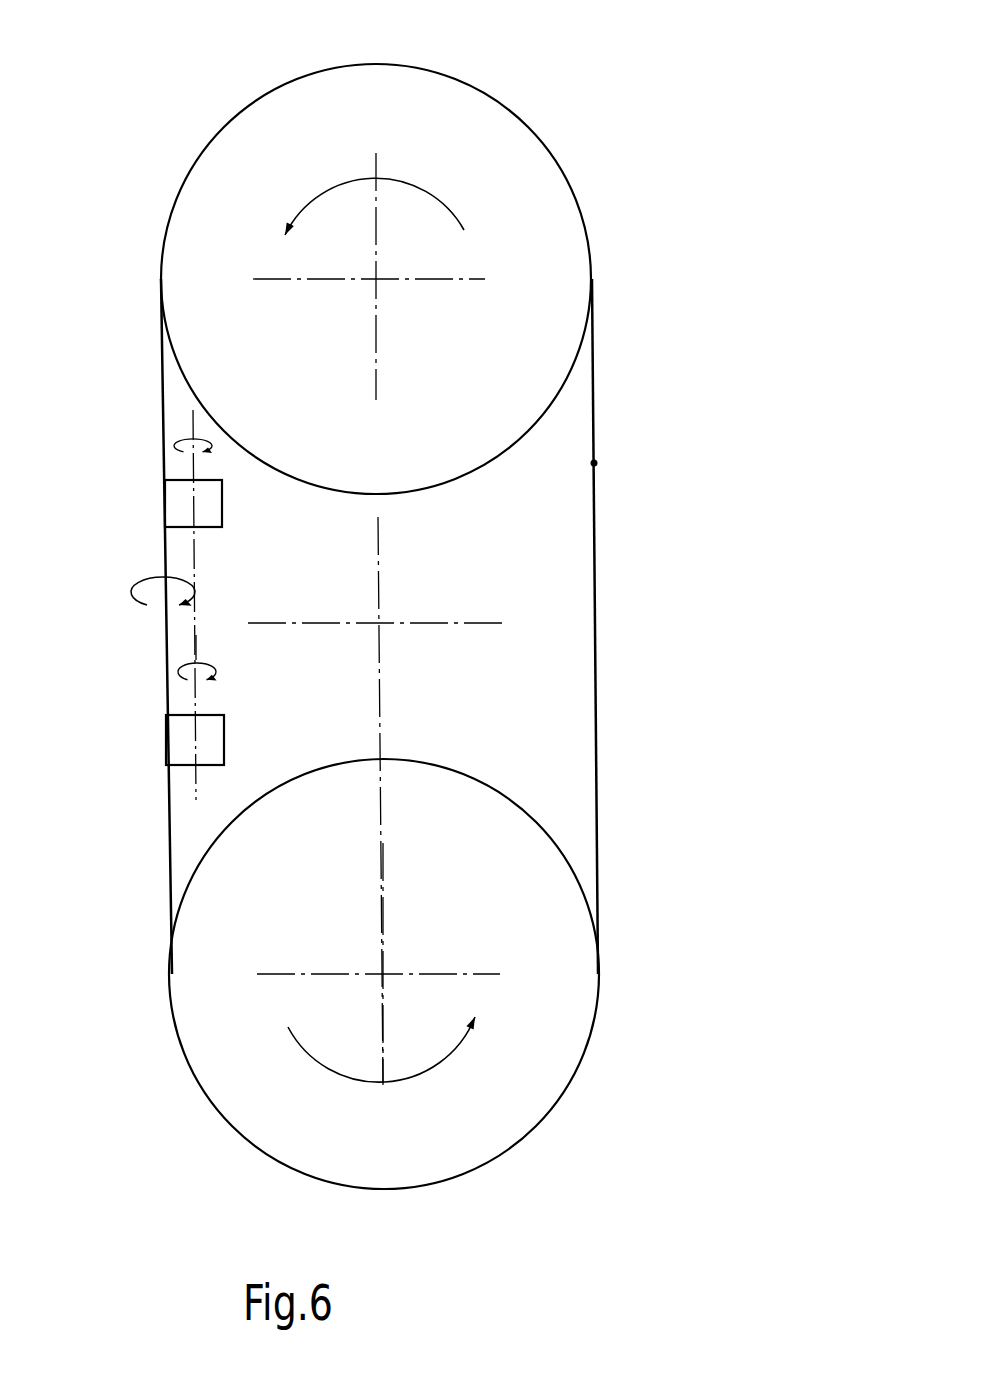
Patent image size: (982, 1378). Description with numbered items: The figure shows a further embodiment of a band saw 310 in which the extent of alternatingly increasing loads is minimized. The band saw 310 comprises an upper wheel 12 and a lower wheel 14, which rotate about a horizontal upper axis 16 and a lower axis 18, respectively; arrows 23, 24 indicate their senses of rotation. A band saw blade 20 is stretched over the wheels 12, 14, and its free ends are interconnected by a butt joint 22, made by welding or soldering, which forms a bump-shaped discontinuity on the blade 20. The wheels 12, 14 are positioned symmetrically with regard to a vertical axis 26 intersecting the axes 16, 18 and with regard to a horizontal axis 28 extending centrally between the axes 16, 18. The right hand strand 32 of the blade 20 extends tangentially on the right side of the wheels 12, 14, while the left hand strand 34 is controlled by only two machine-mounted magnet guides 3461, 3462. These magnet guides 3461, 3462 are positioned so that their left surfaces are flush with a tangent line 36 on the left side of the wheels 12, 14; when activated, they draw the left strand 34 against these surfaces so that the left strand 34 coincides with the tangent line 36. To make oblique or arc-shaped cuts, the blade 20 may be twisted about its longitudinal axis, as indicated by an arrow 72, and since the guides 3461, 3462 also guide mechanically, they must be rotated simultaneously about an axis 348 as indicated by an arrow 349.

The band saw 310 is at (621, 110).
The upper wheel 12 is at (542, 208).
The lower wheel 14 is at (553, 1068).
The upper axis 16 is at (377, 281).
The lower axis 18 is at (383, 974).
The band saw blade 20 is at (389, 626).
The butt joint 22 is at (597, 463).
The arrow 23 is at (423, 188).
The arrow 24 is at (340, 1068).
The vertical axis 26 is at (380, 530).
The horizontal axis 28 is at (504, 623).
The right hand strand 32 is at (594, 577).
The left hand strand 34 is at (112, 626).
The tangent line 36 is at (166, 698).
The arrow 72 is at (137, 585).
The magnet guide 3461 is at (222, 498).
The magnet guide 3462 is at (213, 733).
The axis 348 is at (197, 645).
The arrow 349 is at (217, 668).